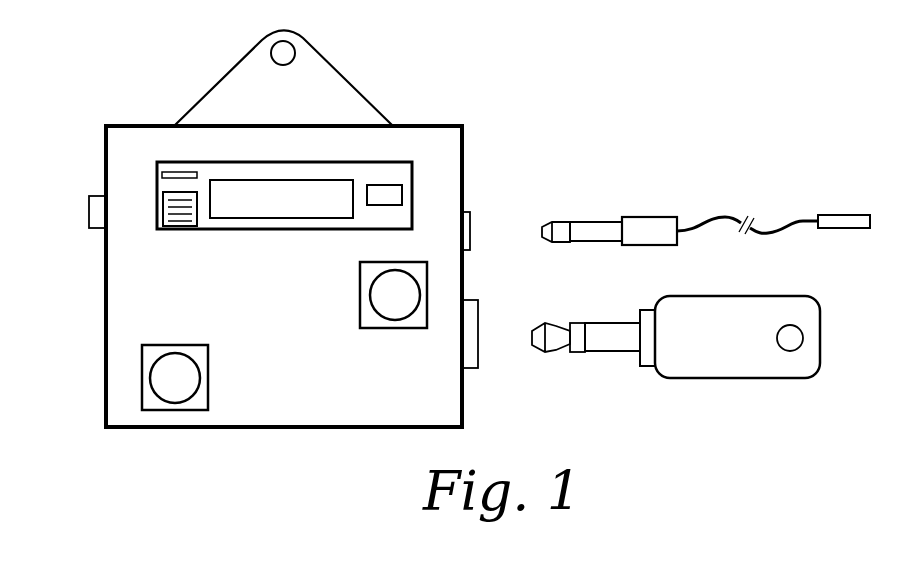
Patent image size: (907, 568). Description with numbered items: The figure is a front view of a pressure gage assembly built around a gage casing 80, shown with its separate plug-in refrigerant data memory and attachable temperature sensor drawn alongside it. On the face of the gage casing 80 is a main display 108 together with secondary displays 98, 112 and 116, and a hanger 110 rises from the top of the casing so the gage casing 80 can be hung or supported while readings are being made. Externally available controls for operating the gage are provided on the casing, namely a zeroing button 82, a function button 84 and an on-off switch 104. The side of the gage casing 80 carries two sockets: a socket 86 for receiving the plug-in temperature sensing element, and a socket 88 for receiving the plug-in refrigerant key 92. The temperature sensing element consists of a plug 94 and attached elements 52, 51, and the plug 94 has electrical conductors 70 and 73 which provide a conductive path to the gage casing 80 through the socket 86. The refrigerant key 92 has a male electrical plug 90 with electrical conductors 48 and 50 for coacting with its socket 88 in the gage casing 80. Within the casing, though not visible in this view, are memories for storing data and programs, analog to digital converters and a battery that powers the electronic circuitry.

The gage casing 80 is at (349, 382).
The hanger 110 is at (317, 88).
The secondary display 116 is at (162, 175).
The secondary display 98 is at (175, 230).
The main display 108 is at (302, 207).
The secondary display 112 is at (402, 193).
The on-off switch 104 is at (90, 207).
The socket 86 is at (470, 218).
The socket 88 is at (478, 360).
The function button 84 is at (377, 293).
The zeroing button 82 is at (180, 392).
The electrical conductor 70 is at (557, 222).
The electrical conductor 73 is at (582, 222).
The plug 94 is at (652, 217).
The temperature sensing element 52 is at (738, 215).
The temperature sensing element 51 is at (838, 228).
The electrical conductor 48 is at (547, 322).
The electrical conductor 50 is at (578, 323).
The male electrical plug 90 is at (593, 352).
The refrigerant key 92 is at (737, 344).